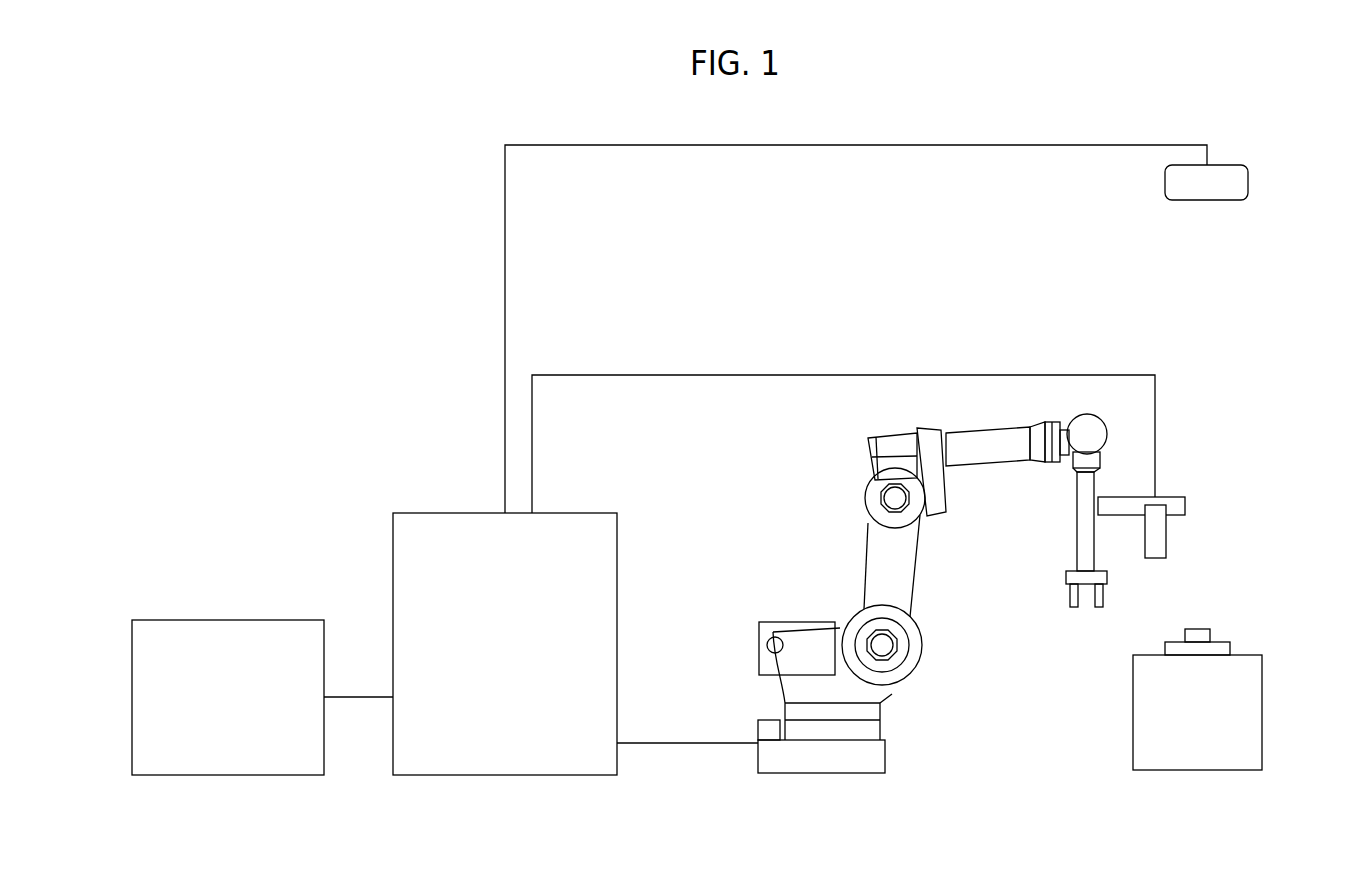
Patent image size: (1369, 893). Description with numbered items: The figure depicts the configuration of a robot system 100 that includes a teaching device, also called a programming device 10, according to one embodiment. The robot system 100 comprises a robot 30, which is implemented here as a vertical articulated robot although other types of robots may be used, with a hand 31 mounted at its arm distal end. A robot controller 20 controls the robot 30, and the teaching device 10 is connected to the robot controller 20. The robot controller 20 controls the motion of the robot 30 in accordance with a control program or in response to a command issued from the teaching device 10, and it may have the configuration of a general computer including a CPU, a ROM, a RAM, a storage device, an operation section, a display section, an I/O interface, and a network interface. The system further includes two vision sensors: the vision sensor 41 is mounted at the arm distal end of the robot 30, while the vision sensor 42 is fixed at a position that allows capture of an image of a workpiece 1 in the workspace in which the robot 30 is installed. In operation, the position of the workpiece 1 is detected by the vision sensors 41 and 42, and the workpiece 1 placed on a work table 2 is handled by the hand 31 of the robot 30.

The robot system 100 is at (412, 214).
The teaching device (programming device) 10 is at (221, 620).
The robot controller 20 is at (617, 580).
The robot 30 is at (850, 558).
The hand 31 is at (1073, 611).
The vision sensor 41 is at (1166, 536).
The vision sensor 42 is at (1248, 183).
The workpiece 1 is at (1222, 641).
The work table 2 is at (1262, 705).